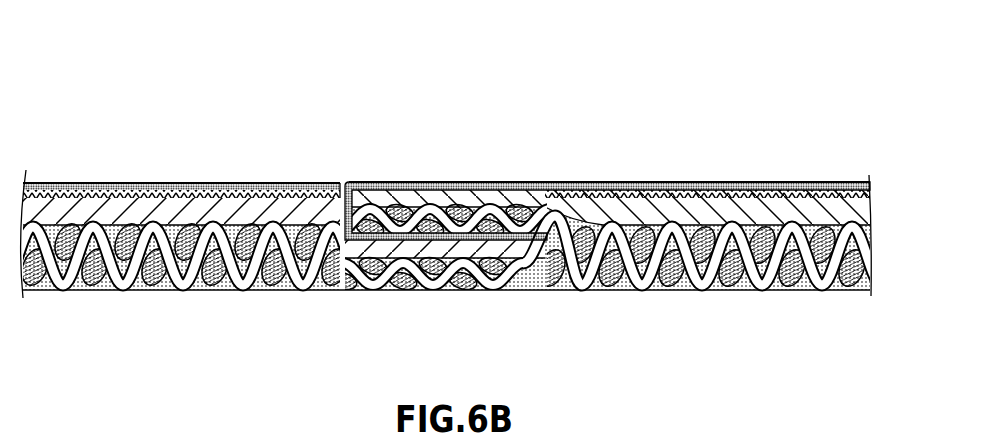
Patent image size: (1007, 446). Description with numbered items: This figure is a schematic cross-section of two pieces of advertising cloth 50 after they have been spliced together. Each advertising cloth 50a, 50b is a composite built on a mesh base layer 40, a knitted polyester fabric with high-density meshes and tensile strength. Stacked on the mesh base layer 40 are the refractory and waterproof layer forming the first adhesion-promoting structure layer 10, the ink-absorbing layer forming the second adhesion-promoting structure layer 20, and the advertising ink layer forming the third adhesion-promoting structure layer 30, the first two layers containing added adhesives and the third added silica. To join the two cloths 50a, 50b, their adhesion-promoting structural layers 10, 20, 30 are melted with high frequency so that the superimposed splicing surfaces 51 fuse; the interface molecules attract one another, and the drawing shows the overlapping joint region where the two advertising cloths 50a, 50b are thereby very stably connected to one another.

The advertising cloth 50 is at (83, 52).
The advertising cloth 50a is at (171, 168).
The advertising cloth 50b is at (644, 166).
The splicing surfaces 51 is at (345, 165).
The first adhesion-promoting structure layer 10 is at (870, 230).
The second adhesion-promoting structure layer 20 is at (828, 207).
The third adhesion-promoting structure layer 30 is at (758, 183).
The mesh base layer 40 is at (762, 280).